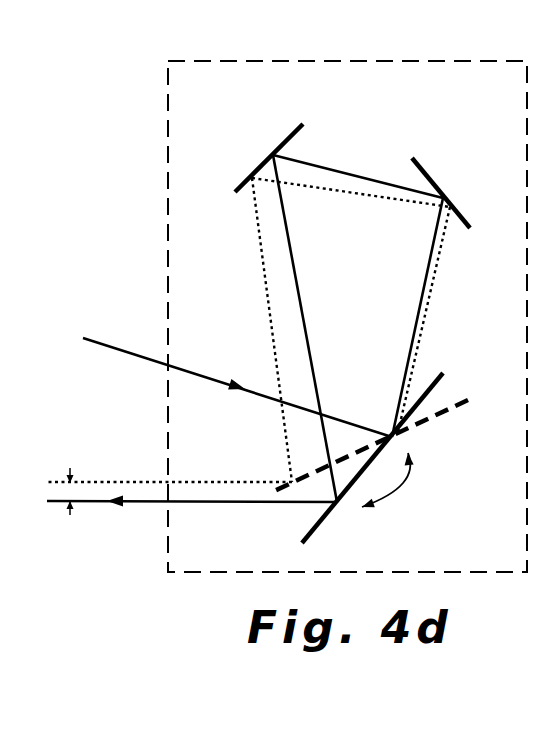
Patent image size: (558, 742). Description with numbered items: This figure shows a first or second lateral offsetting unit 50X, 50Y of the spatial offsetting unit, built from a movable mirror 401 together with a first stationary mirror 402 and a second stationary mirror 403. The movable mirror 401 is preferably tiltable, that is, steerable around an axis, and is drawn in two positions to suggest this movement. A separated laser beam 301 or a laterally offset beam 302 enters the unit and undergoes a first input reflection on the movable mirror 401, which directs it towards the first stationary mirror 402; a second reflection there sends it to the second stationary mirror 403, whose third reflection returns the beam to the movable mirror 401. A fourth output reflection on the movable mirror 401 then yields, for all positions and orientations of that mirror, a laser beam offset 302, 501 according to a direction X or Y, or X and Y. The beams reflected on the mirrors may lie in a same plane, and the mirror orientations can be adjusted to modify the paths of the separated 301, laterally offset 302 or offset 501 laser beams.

The first lateral offsetting unit 50X is at (288, 289).
The second lateral offsetting unit 50Y is at (192, 62).
The movable mirror 401 is at (430, 393).
The first stationary mirror 402 is at (427, 173).
The second stationary mirror 403 is at (276, 155).
The separated laser beam 301 is at (118, 348).
The laterally offset beam 302 is at (248, 370).
The offset laser beam 501 is at (130, 555).